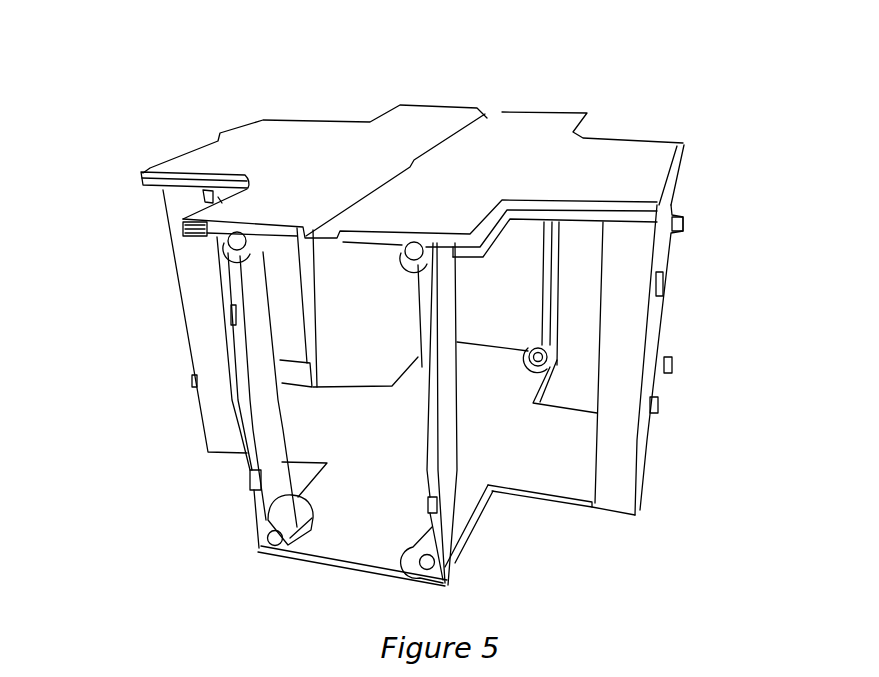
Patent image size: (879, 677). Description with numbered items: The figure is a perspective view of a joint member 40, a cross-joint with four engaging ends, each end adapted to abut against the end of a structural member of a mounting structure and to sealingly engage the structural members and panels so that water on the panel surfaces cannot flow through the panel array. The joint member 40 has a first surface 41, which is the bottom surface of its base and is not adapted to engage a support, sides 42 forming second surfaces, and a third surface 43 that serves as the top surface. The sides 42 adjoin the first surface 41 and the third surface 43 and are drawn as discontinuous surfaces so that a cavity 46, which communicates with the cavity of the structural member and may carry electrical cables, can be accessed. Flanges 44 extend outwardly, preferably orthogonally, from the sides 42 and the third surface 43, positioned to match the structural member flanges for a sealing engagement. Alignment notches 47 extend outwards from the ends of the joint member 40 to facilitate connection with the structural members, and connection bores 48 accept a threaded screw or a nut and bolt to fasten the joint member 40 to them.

The joint member 40 is at (743, 127).
The first surface 41 is at (598, 513).
The sides 42 is at (633, 347).
The third surface 43 is at (298, 148).
The flanges 44 is at (187, 185).
The cavity 46 is at (496, 367).
The alignment notches 47 is at (680, 225).
The connection bores 48 is at (237, 233).